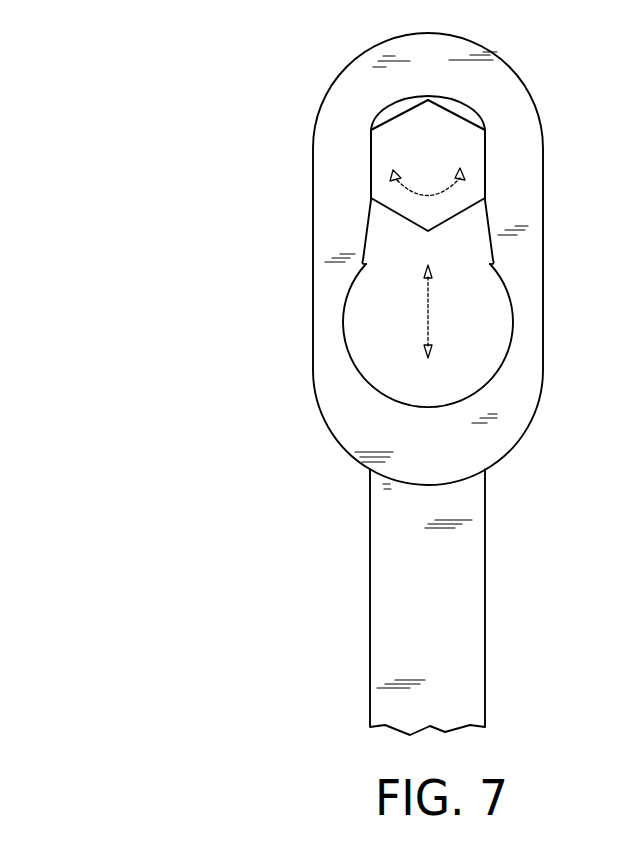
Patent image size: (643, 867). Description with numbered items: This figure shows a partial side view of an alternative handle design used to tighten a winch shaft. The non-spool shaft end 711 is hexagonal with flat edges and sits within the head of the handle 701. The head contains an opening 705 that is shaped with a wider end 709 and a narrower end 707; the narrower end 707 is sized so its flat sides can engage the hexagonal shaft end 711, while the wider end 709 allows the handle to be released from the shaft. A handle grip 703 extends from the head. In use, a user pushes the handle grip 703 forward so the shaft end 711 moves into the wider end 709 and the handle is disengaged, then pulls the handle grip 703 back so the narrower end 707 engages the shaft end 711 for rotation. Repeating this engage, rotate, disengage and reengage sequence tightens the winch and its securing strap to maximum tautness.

The handle 701 is at (308, 492).
The handle grip 703 is at (470, 570).
The opening 705 is at (403, 335).
The narrower end 707 is at (370, 181).
The wider end 709 is at (510, 340).
The non-spool shaft end 711 is at (395, 130).